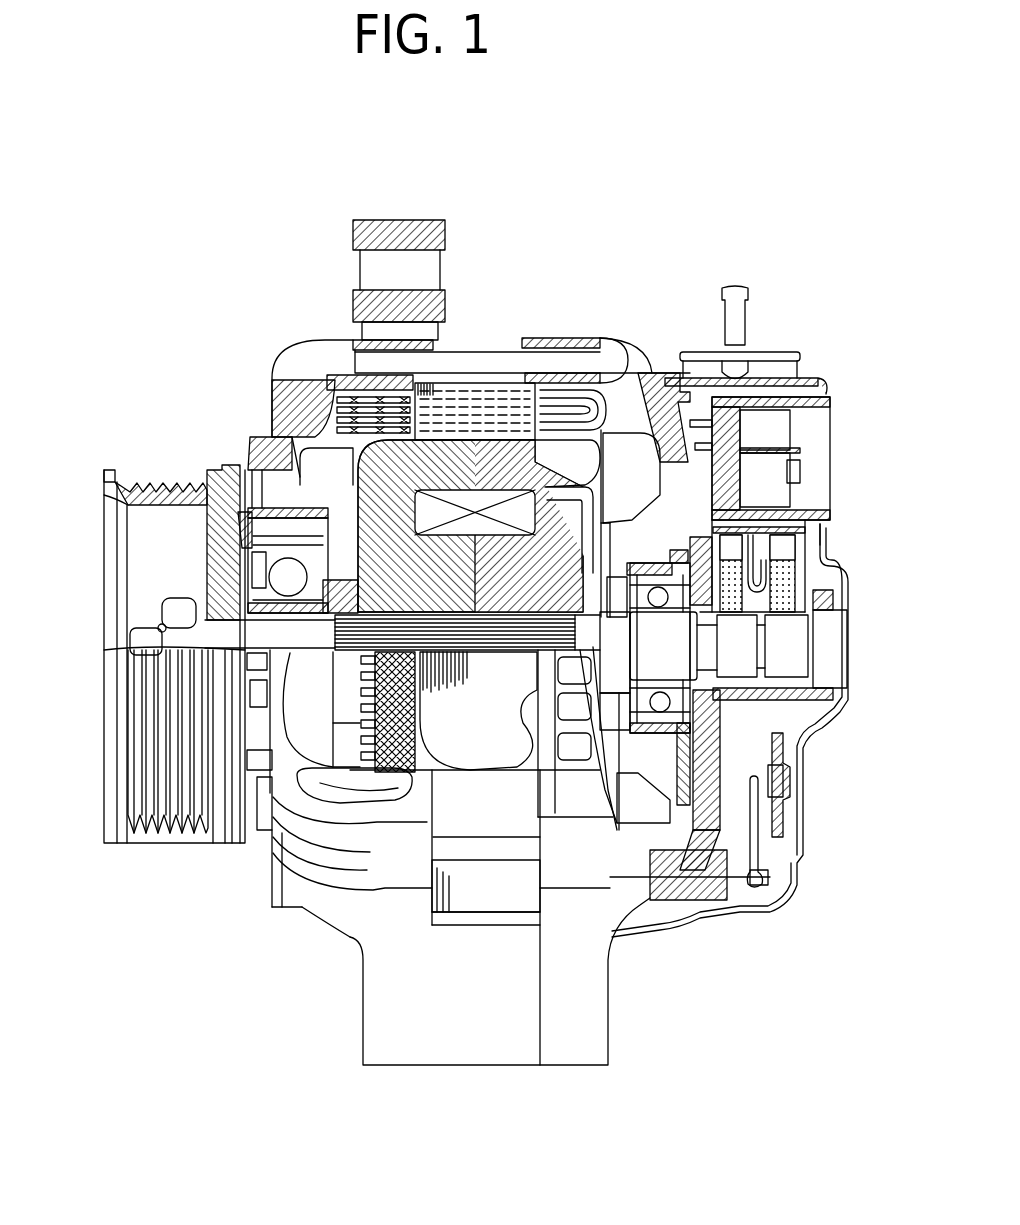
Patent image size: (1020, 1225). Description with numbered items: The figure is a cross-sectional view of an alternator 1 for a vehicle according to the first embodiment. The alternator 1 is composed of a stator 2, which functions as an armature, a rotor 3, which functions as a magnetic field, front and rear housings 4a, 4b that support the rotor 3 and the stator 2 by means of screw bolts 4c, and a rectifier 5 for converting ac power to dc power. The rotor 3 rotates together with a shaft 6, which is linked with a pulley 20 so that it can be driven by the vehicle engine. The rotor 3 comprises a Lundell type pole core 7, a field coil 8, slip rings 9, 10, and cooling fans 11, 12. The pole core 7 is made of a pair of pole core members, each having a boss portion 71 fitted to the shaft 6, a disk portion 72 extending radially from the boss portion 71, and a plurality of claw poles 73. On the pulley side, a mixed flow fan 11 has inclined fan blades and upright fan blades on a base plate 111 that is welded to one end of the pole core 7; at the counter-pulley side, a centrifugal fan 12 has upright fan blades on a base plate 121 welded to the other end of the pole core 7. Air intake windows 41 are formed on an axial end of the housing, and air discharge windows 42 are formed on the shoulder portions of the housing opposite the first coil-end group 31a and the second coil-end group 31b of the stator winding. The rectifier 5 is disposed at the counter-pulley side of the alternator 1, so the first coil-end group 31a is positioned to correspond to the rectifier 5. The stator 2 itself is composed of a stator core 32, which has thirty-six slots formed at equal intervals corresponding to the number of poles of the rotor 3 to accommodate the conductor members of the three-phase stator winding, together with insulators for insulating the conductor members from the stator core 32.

The alternator 1 is at (660, 260).
The stator 2 is at (604, 372).
The rotor 3 is at (316, 434).
The first coil-end group 31a is at (565, 392).
The second coil-end group 31b is at (335, 445).
The stator core 32 is at (452, 390).
The front housing 4a is at (380, 343).
The rear housing 4b is at (601, 336).
The screw bolts 4c is at (485, 355).
The air intake windows 41 is at (255, 485).
The air discharge windows 42 is at (290, 370).
The rectifier 5 is at (783, 780).
The shaft 6 is at (245, 625).
The Lundell type pole core 7 is at (637, 497).
The boss portion 71 is at (740, 495).
The disk portion 72 is at (300, 462).
The claw poles 73 is at (312, 430).
The field coil 8 is at (480, 495).
The slip ring 9 is at (740, 660).
The slip ring 10 is at (793, 633).
The pulley-side mixed flow fan 11 is at (300, 490).
The base plate 111 is at (212, 553).
The centrifugal fan 12 is at (772, 470).
The base plate 121 is at (822, 534).
The pulley 20 is at (125, 505).